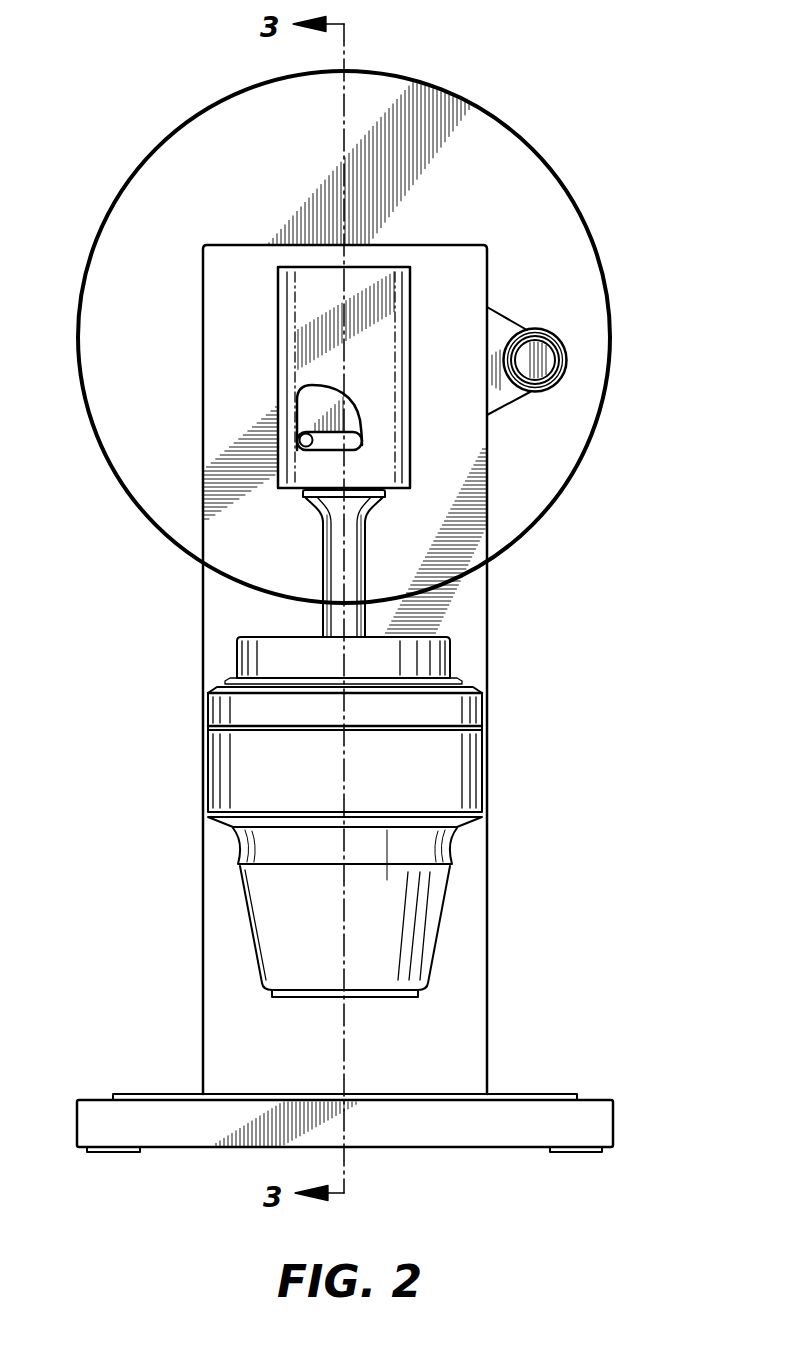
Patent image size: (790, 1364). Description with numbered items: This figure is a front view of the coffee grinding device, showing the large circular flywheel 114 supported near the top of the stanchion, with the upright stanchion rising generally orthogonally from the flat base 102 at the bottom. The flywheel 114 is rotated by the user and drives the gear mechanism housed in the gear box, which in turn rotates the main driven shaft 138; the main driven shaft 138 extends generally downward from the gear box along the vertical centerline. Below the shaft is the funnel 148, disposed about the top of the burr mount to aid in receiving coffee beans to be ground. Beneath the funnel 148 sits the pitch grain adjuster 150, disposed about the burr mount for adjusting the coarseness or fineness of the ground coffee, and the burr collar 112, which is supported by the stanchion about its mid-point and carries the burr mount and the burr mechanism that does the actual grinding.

The base 102 is at (92, 1100).
The burr collar 112 is at (463, 763).
The flywheel 114 is at (502, 163).
The main driven shaft 138 is at (353, 578).
The funnel 148 is at (253, 659).
The pitch grain adjuster 150 is at (223, 707).